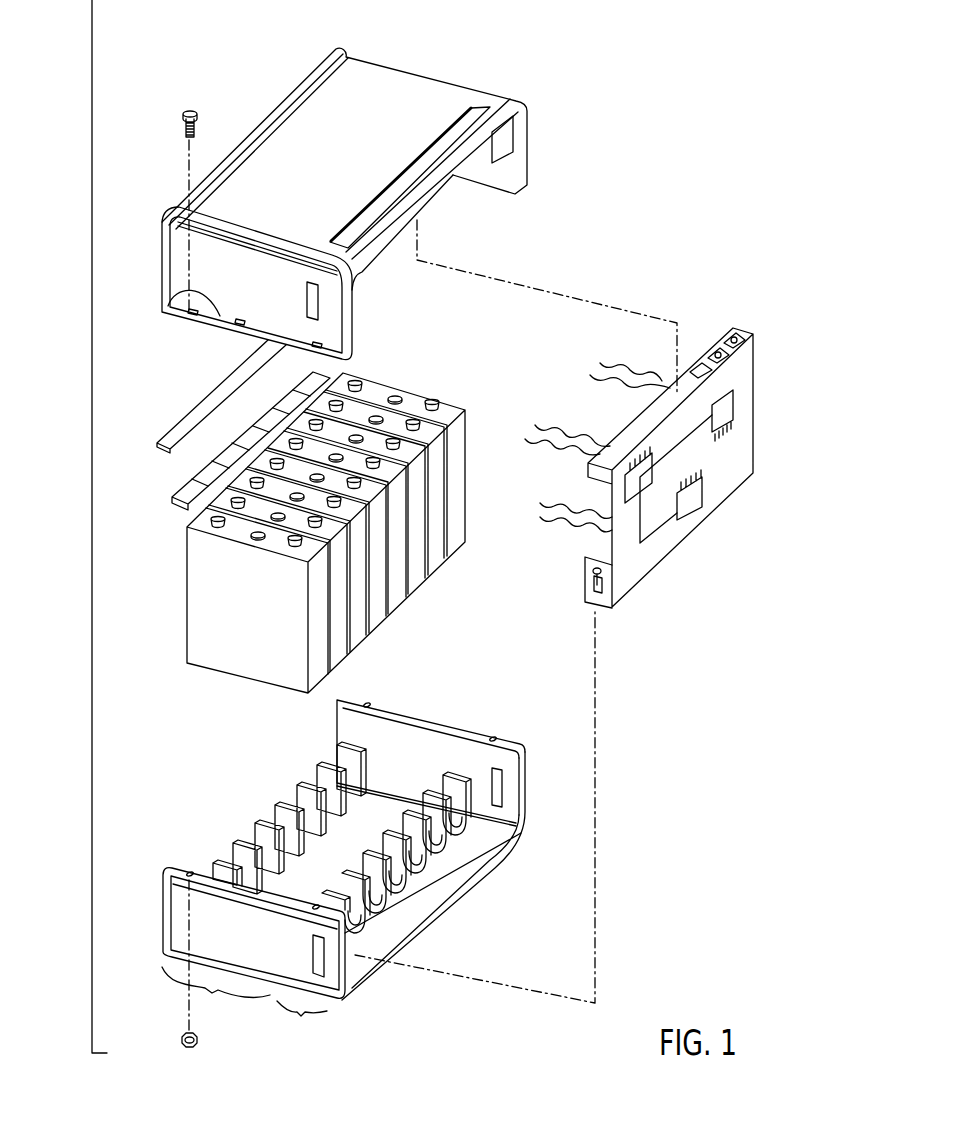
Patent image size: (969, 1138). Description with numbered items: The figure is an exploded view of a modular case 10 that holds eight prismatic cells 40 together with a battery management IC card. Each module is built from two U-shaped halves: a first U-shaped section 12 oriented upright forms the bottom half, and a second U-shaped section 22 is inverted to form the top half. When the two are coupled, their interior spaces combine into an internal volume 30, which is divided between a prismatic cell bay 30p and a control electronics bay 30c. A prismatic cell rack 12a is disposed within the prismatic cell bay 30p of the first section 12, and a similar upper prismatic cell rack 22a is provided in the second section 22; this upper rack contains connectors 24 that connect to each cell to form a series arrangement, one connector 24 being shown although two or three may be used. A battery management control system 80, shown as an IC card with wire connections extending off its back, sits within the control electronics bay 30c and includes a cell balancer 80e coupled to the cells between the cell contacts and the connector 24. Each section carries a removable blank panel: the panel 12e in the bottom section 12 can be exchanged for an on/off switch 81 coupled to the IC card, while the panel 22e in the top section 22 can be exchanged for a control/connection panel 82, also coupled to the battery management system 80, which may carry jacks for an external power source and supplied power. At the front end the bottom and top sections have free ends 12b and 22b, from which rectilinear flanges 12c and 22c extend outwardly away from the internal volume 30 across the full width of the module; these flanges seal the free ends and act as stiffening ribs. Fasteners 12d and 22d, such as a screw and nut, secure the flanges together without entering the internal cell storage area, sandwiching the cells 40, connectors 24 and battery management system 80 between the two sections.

The modular case 10 is at (92, 524).
The first U-shaped section 12 is at (180, 920).
The prismatic cell rack 12a is at (277, 806).
The free end 12b is at (460, 732).
The flange 12c is at (337, 705).
The fastener 12d is at (197, 1041).
The removable blank panel 12e is at (312, 965).
The second U-shaped section 22 is at (183, 262).
The prismatic cell rack 22a is at (317, 150).
The free end 22b is at (168, 301).
The flange 22c is at (213, 323).
The fastener 22d is at (197, 128).
The removable blank panel 22e is at (372, 213).
The connector 24 is at (175, 433).
The internal volume 30 is at (477, 203).
The prismatic cell bay 30p is at (216, 991).
The control electronics bay 30c is at (302, 1020).
The prismatic cell 40 is at (262, 625).
The battery management control system 80 is at (670, 540).
The cell balancer 80e is at (172, 500).
The on/off switch 81 is at (598, 588).
The control/connection panel 82 is at (738, 331).